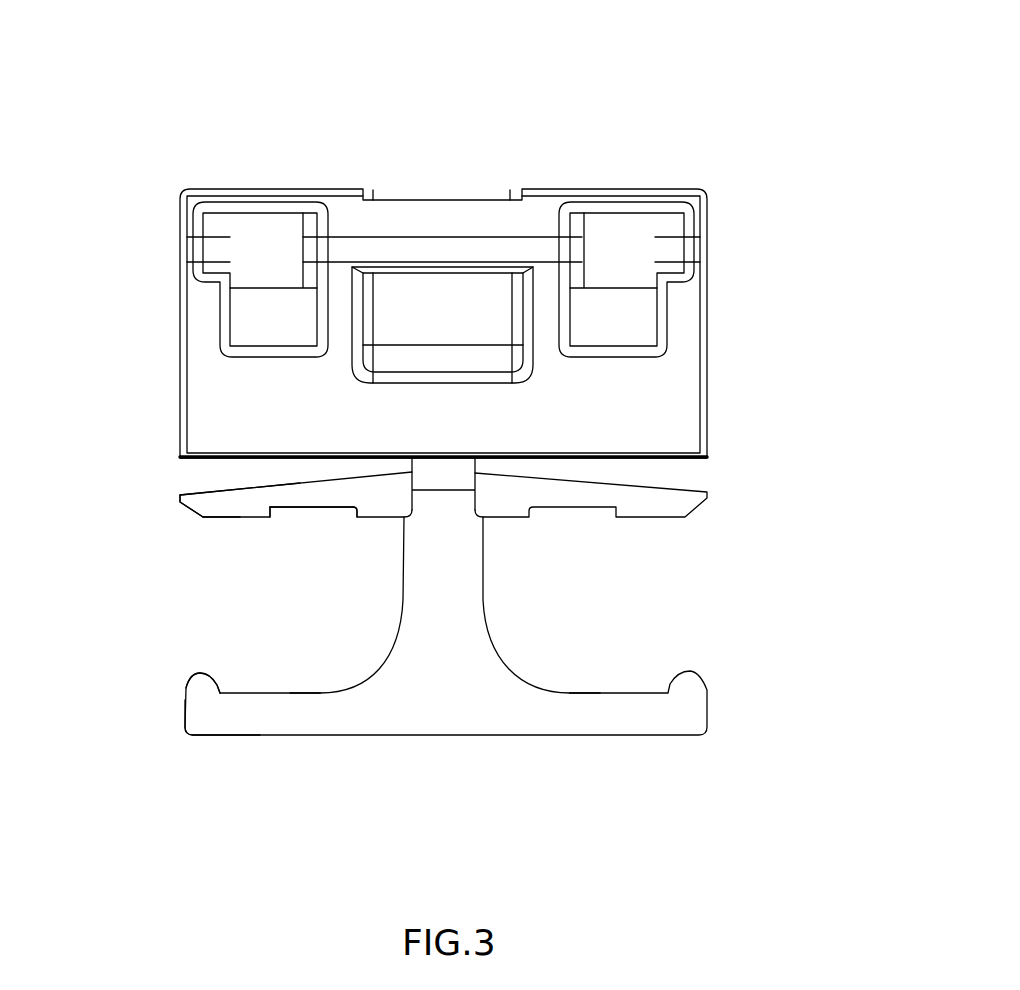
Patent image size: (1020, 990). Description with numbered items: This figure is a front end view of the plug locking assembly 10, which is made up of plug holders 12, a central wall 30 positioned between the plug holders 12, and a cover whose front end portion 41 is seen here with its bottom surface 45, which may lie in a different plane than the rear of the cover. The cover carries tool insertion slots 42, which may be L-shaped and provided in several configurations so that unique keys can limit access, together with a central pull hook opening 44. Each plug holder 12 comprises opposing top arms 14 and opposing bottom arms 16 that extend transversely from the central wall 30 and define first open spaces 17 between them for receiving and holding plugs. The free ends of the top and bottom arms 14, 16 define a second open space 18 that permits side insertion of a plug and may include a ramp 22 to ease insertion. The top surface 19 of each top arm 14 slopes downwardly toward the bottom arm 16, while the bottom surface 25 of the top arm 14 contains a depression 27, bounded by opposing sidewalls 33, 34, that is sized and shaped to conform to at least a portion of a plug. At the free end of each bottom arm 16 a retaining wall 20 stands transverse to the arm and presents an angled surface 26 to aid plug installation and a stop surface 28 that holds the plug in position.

The plug locking assembly 10 is at (540, 142).
The plug holder 12 is at (722, 492).
The top arm 14 is at (632, 498).
The bottom arm 16 is at (626, 714).
The first open space 17 is at (640, 607).
The second open space 18 is at (272, 645).
The top surface 19 is at (252, 487).
The retaining wall 20 is at (203, 712).
The ramp 22 is at (193, 510).
The bottom surface 25 is at (227, 520).
The angled surface 26 is at (185, 689).
The depression 27 is at (311, 507).
The stop surface 28 is at (220, 693).
The central wall 30 is at (443, 600).
The sidewall 33 is at (270, 518).
The sidewall 34 is at (357, 508).
The front end portion 41 is at (265, 387).
The tool insertion slot 42 is at (270, 265).
The central pull hook opening 44 is at (438, 305).
The bottom surface 45 is at (647, 460).